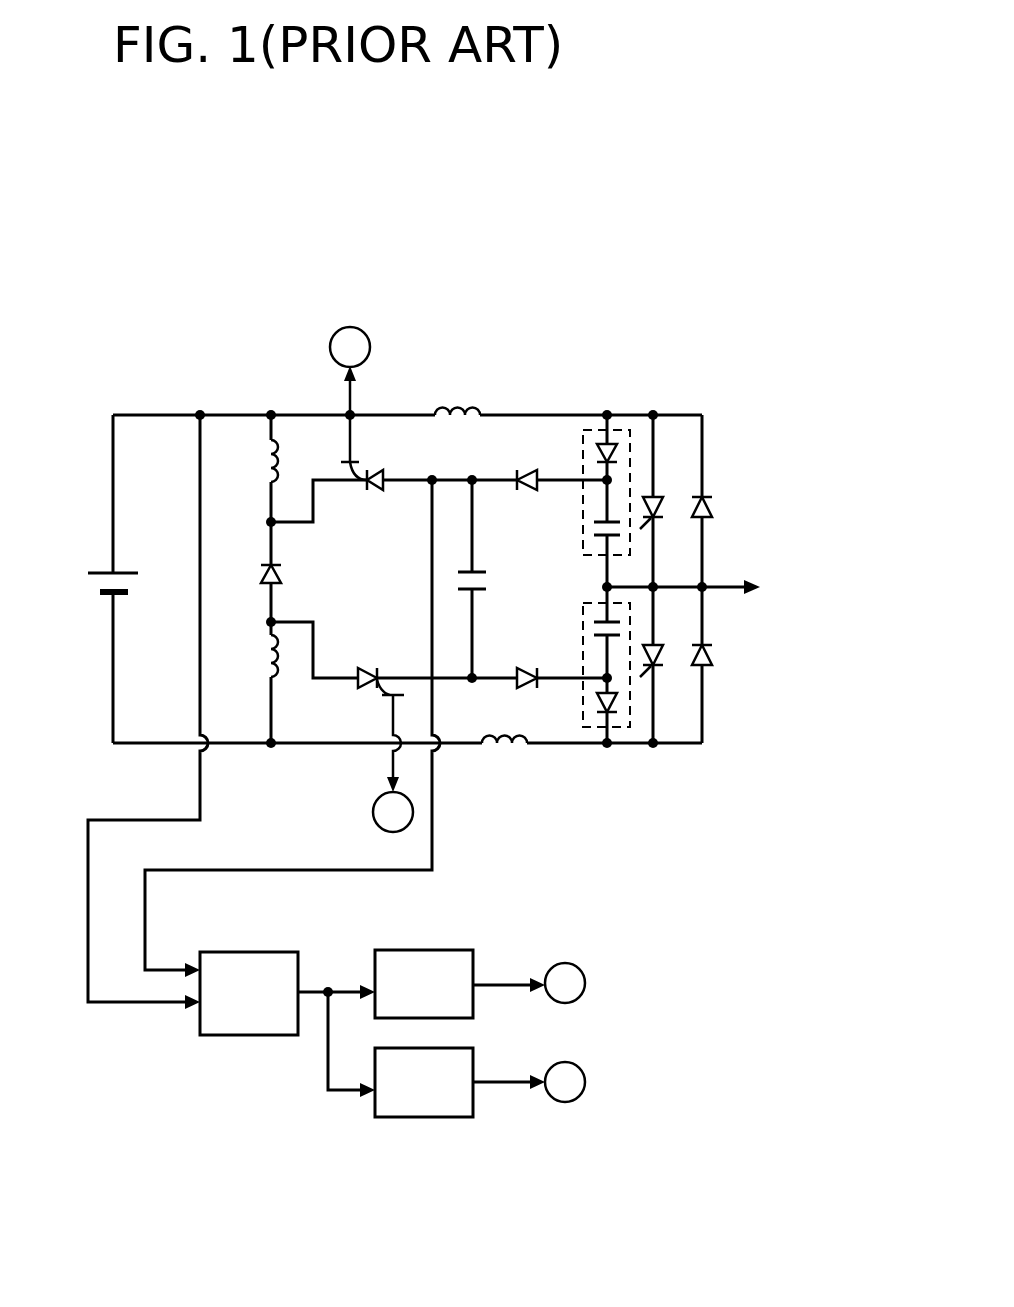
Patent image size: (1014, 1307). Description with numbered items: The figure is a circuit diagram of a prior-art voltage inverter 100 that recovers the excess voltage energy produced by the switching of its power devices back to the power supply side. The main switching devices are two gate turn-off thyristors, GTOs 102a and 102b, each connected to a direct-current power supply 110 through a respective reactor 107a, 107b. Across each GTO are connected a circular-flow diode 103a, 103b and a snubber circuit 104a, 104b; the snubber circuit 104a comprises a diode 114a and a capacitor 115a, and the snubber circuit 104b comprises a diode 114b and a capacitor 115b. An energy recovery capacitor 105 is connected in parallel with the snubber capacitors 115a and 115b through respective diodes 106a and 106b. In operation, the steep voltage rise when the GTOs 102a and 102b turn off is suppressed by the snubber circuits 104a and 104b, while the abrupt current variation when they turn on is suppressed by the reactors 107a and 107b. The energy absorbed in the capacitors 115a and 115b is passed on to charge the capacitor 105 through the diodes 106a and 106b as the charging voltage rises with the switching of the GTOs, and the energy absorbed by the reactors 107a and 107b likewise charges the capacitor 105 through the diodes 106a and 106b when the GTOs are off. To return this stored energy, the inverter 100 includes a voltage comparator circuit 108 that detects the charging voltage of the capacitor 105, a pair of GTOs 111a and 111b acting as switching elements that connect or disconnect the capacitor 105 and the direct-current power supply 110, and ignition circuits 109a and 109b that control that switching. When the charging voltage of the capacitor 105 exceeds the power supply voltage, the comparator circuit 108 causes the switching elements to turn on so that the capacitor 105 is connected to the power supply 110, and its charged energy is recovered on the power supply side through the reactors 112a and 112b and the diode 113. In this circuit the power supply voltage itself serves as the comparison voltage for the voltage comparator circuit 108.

The voltage inverter 100 is at (636, 296).
The GTO 102a is at (645, 528).
The GTO 102b is at (660, 668).
The circular-flow diode 103a is at (714, 500).
The circular-flow diode 103b is at (714, 650).
The snubber circuit 104a is at (630, 408).
The snubber circuit 104b is at (597, 748).
The capacitor 105 is at (490, 585).
The diode 106a is at (520, 470).
The diode 106b is at (532, 690).
The reactor 107a is at (458, 410).
The reactor 107b is at (503, 755).
The voltage comparator circuit 108 is at (250, 1037).
The ignition circuit 109a is at (450, 947).
The ignition circuit 109b is at (430, 1120).
The direct-current power supply 110 is at (100, 566).
The GTO 111a is at (380, 492).
The GTO 111b is at (368, 666).
The reactor 112a is at (268, 458).
The reactor 112b is at (268, 650).
The diode 113 is at (262, 571).
The diode 114a is at (583, 412).
The diode 114b is at (628, 735).
The capacitor 115a is at (581, 530).
The capacitor 115b is at (578, 628).